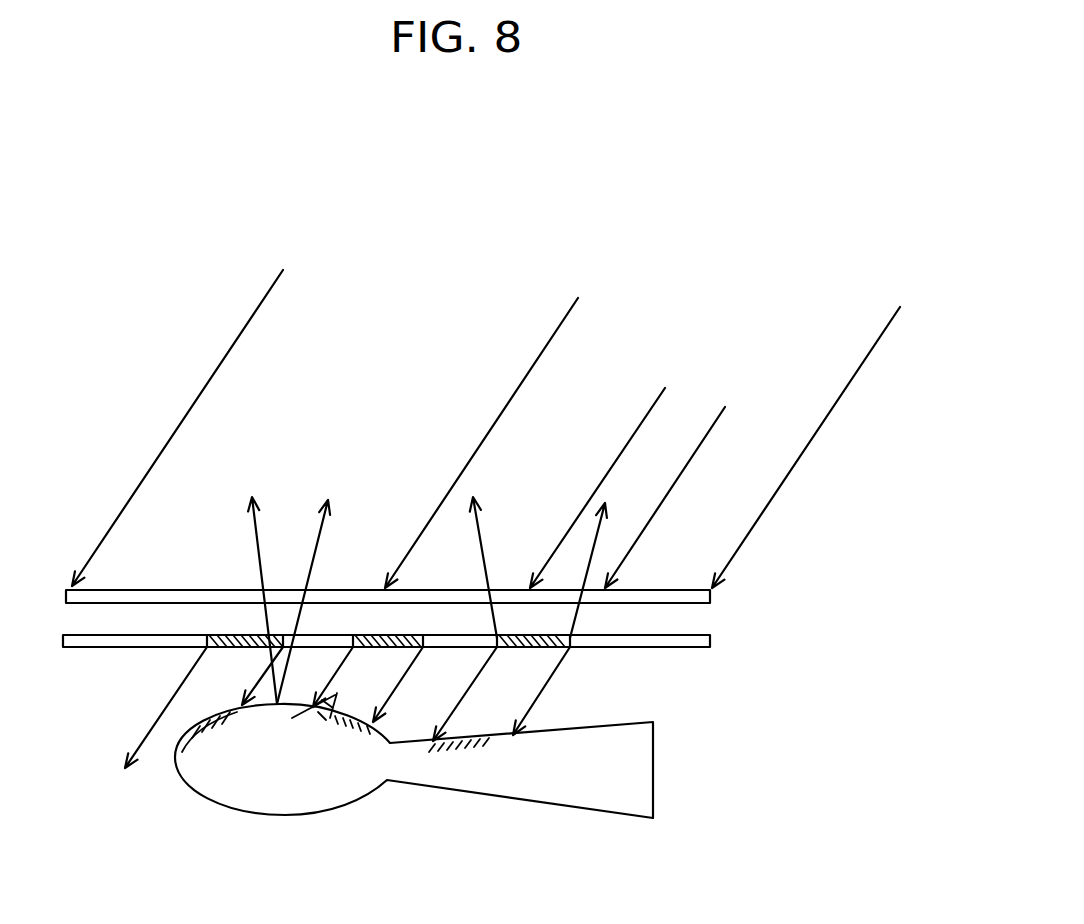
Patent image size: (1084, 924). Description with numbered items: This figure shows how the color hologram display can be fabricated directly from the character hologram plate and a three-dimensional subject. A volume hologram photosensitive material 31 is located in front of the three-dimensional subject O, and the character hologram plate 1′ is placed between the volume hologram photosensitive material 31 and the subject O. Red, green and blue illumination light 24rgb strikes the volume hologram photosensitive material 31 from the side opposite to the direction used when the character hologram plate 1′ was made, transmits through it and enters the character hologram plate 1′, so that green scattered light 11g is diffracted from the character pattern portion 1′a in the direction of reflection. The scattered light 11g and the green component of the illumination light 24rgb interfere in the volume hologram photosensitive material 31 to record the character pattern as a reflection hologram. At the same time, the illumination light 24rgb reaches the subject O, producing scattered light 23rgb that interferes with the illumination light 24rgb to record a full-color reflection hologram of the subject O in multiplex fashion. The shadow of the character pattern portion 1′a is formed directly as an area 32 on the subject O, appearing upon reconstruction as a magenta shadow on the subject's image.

The illumination light 24rgb is at (812, 443).
The volume hologram photosensitive material 31 is at (712, 596).
The character hologram plate 1′ is at (712, 641).
The character pattern portion 1′a is at (545, 648).
The scattered light 23rgb is at (340, 484).
The green scattered light 11g is at (632, 485).
The three-dimensional subject O is at (655, 775).
The area 32 is at (230, 823).